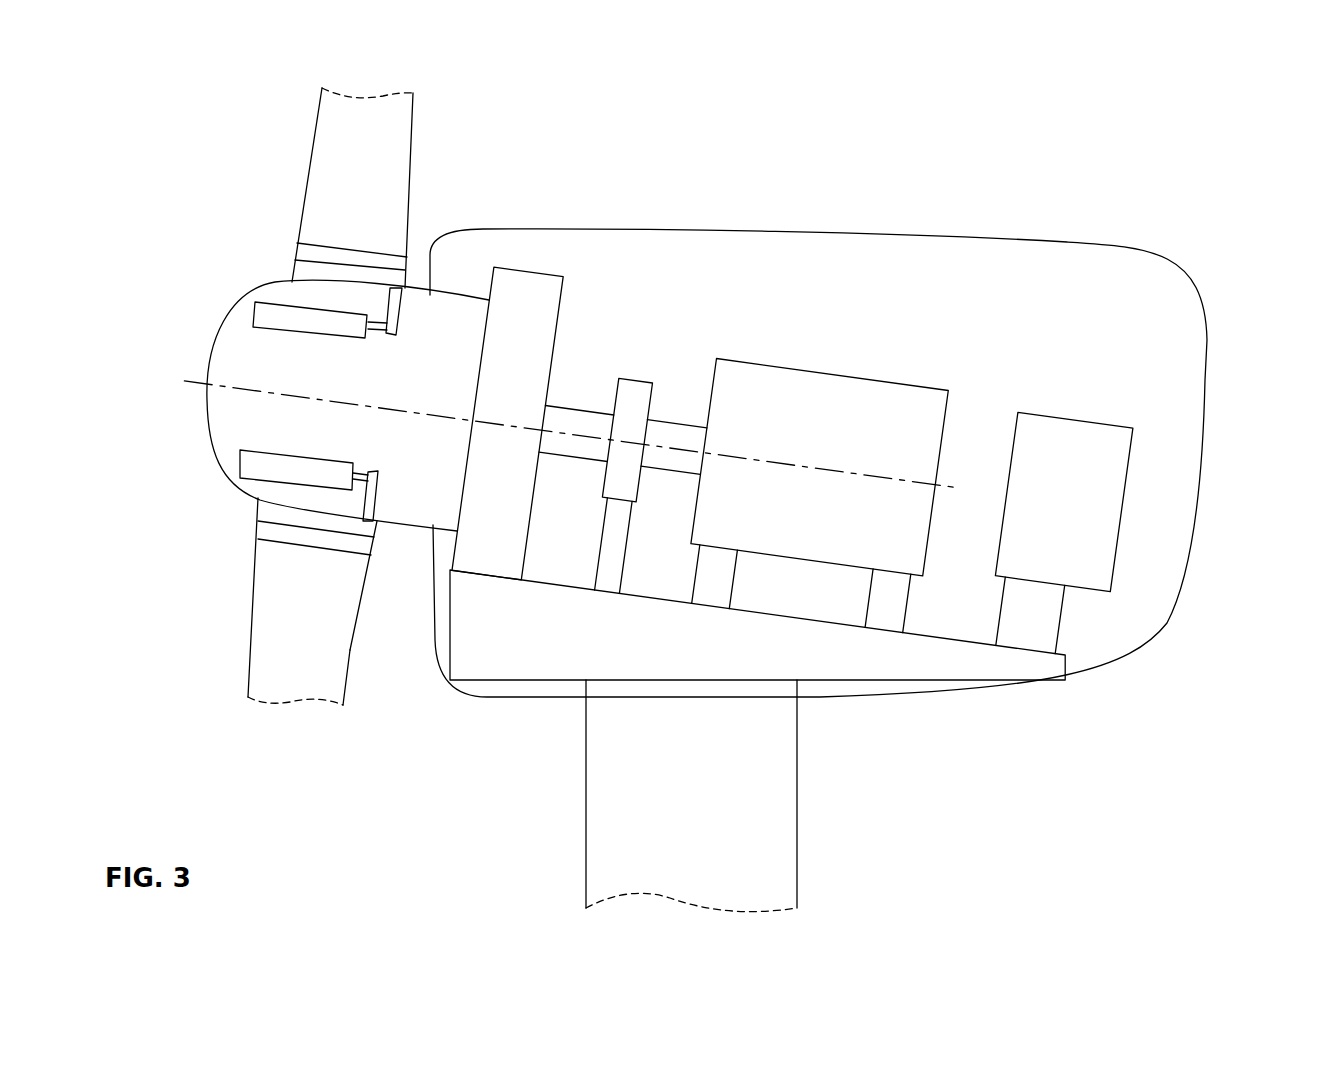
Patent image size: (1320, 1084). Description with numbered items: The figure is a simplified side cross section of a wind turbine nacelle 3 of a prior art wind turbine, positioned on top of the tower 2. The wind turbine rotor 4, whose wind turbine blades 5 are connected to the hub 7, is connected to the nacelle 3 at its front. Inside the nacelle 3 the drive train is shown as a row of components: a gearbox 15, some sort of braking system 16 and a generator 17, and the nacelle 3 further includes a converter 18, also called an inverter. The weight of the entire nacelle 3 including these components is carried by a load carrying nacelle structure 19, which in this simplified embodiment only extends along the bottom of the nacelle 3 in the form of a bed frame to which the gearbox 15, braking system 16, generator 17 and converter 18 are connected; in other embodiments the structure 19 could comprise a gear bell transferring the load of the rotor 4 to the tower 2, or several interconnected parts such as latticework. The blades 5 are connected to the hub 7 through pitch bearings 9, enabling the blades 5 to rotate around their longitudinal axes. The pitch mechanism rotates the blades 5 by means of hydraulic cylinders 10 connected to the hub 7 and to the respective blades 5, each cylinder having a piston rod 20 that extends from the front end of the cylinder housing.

The tower 2 is at (767, 868).
The wind turbine nacelle 3 is at (1250, 255).
The wind turbine rotor 4 is at (240, 164).
The wind turbine blade 5 is at (377, 180).
The hub 7 is at (293, 293).
The pitch bearing 9 is at (283, 537).
The hydraulic cylinder 10 is at (268, 315).
The gearbox 15 is at (525, 305).
The braking system 16 is at (637, 400).
The generator 17 is at (790, 408).
The converter 18 is at (1083, 463).
The nacelle structure 19 is at (888, 653).
The piston rod 20 is at (363, 520).